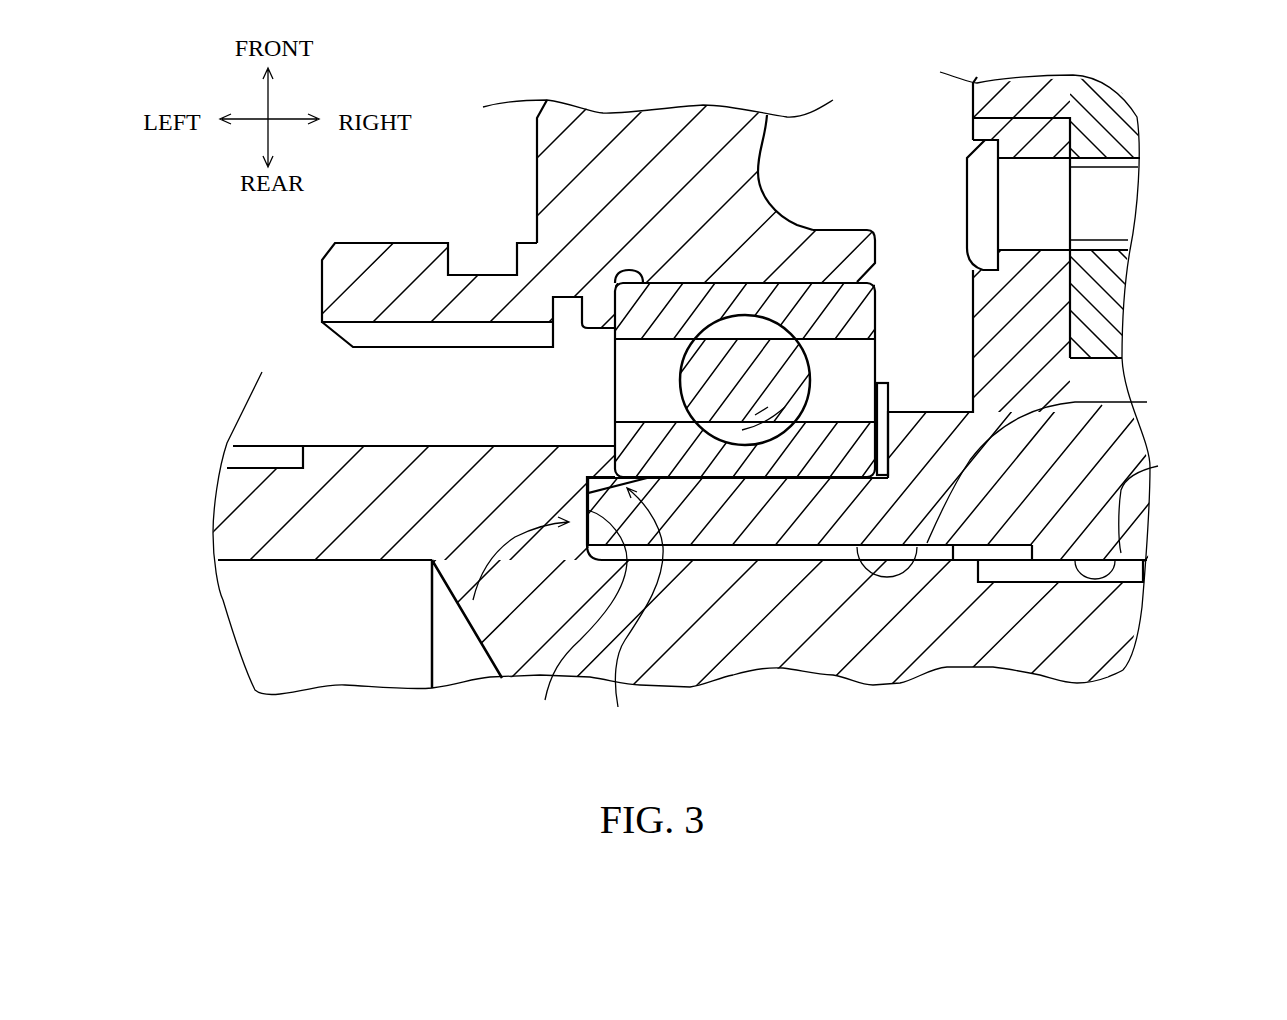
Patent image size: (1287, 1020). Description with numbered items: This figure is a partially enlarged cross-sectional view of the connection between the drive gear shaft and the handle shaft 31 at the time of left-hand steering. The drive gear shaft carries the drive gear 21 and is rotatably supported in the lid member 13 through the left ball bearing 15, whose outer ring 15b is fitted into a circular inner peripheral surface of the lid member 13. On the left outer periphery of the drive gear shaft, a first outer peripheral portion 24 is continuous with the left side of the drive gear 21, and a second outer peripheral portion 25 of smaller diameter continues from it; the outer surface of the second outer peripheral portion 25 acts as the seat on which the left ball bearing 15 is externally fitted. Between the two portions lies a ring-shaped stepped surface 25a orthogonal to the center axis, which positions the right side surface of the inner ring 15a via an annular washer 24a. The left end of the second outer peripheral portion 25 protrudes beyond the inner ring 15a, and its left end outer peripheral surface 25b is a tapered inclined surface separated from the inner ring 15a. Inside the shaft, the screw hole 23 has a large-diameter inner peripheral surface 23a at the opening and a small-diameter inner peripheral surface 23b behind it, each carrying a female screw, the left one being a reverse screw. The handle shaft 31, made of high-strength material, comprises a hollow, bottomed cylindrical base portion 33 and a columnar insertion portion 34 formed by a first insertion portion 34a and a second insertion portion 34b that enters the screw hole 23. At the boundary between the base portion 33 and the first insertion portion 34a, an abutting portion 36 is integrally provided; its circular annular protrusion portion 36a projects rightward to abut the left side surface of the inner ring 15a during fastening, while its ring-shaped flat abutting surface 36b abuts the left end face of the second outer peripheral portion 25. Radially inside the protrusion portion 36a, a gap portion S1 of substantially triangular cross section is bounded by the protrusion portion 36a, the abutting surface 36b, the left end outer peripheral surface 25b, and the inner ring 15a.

The lid member 13 is at (667, 157).
The left ball bearing 15 is at (747, 280).
The inner ring 15a is at (613, 298).
The outer ring 15b is at (663, 448).
The drive gear 21 is at (1103, 108).
The screw hole 23 is at (876, 514).
The large-diameter inner peripheral surface 23a is at (1087, 465).
The small-diameter inner peripheral surface 23b is at (1193, 499).
The first outer peripheral portion 24 is at (925, 440).
The annular washer 24a is at (883, 380).
The second outer peripheral portion 25 is at (740, 527).
The stepped surface 25a is at (887, 440).
The left end outer peripheral surface 25b is at (600, 493).
The handle shaft 31 is at (682, 570).
The base portion 33 is at (362, 473).
The insertion portion 34 is at (962, 638).
The first insertion portion 34a is at (827, 588).
The second insertion portion 34b is at (1085, 607).
The abutting portion 36 is at (480, 572).
The protrusion portion 36a is at (598, 457).
The abutting surface 36b is at (579, 621).
The gap portion S1 is at (568, 610).